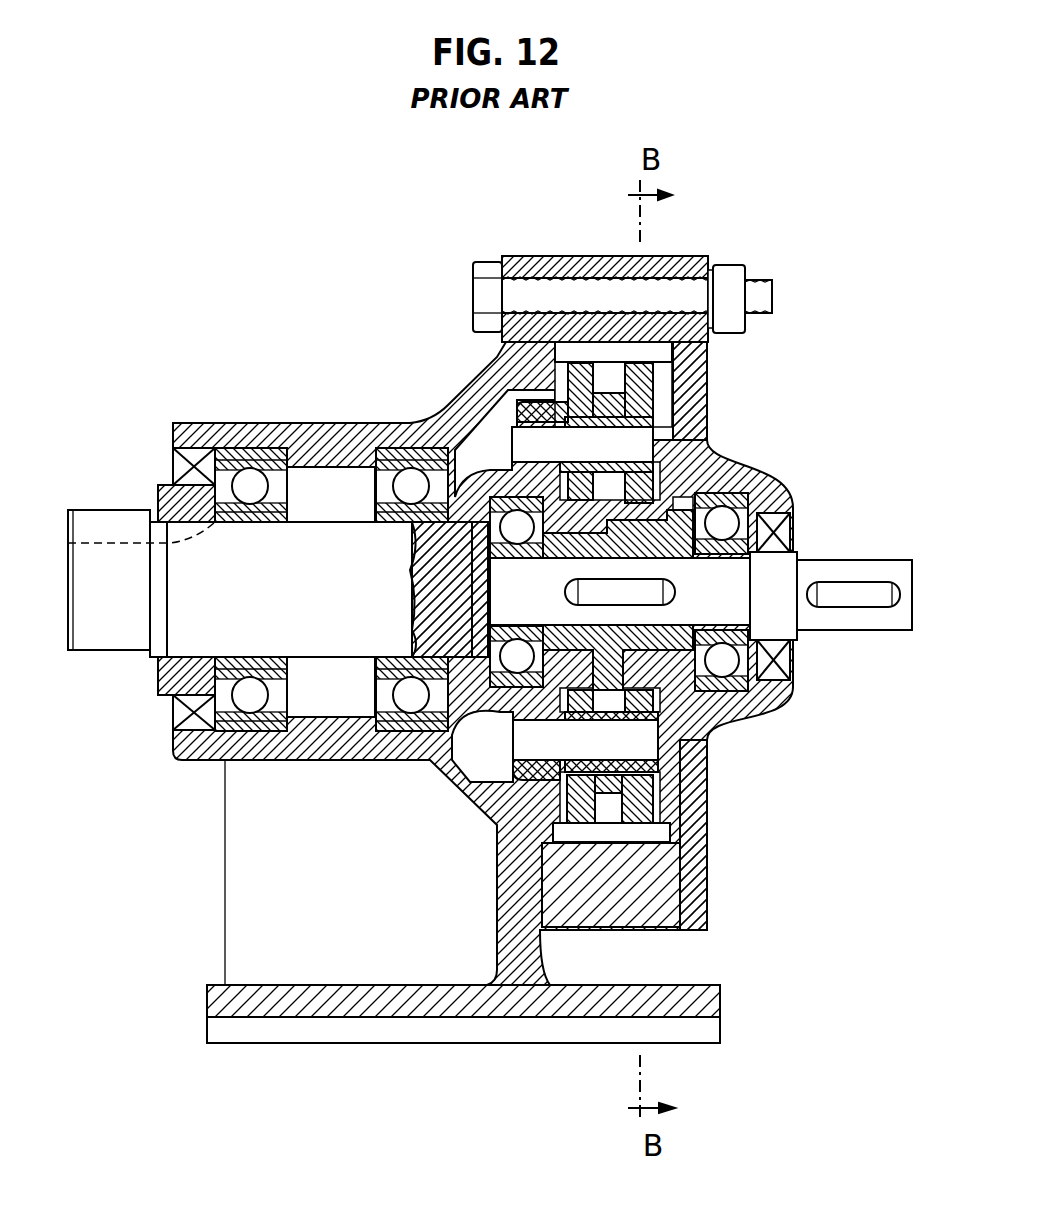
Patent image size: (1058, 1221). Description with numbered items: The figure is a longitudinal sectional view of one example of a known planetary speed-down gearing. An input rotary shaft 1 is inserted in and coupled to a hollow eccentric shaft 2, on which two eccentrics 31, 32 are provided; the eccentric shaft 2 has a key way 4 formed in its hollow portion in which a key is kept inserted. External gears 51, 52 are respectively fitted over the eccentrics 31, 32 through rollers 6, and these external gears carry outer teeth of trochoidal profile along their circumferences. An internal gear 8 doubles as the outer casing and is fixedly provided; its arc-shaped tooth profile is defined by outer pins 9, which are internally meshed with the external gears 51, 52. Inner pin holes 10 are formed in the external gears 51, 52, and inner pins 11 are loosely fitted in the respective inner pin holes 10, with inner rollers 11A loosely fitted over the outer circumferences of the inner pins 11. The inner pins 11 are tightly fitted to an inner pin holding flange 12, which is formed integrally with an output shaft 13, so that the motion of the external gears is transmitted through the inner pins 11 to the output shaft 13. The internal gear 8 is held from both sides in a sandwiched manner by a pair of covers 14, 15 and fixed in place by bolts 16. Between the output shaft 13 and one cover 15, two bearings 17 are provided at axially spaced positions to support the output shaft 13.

The input rotary shaft 1 is at (848, 565).
The hollow eccentric shaft 2 is at (653, 740).
The eccentric 31 is at (650, 548).
The eccentric 32 is at (585, 635).
The key way 4 is at (578, 590).
The external gear 51 is at (648, 380).
The external gear 52 is at (560, 805).
The rollers 6 is at (512, 730).
The internal gear 8 is at (565, 258).
The outer pins 9 is at (570, 352).
The inner pin holes 10 is at (640, 418).
The inner pins 11 is at (695, 770).
The inner rollers 11A is at (708, 812).
The inner pin holding flange 12 is at (513, 487).
The output shaft 13 is at (113, 650).
The cover 14 is at (695, 347).
The cover 15 is at (465, 400).
The bolts 16 is at (725, 290).
The bearings 17 is at (255, 487).